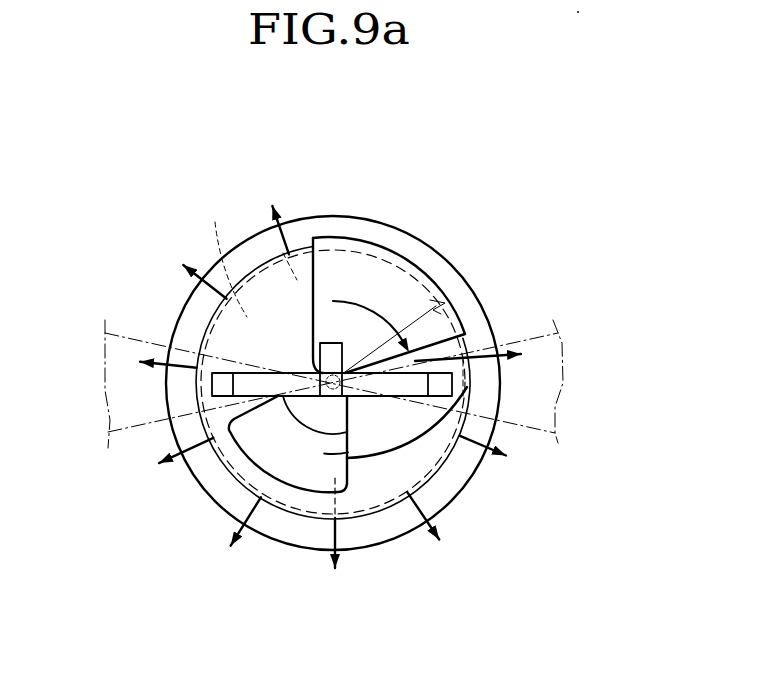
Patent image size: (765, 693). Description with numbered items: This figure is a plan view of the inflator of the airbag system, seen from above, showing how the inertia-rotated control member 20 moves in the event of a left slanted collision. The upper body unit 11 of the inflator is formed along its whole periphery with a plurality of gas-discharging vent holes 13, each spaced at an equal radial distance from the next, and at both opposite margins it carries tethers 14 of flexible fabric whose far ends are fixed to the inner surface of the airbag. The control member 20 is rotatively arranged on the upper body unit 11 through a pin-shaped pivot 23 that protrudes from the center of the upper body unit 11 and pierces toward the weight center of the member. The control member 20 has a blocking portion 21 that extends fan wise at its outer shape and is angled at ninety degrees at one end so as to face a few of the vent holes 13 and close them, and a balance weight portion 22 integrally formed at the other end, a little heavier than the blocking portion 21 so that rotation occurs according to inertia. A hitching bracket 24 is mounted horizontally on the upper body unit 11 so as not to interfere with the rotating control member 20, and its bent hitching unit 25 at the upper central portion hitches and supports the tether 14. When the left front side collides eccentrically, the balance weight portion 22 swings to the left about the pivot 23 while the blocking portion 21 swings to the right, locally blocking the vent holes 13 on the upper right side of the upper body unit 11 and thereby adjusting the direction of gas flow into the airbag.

The upper body unit 11 is at (333, 422).
The vent holes 13 is at (287, 255).
The tethers 14 is at (110, 478).
The control member 20 is at (408, 355).
The blocking portion 21 is at (429, 284).
The balance weight portion 22 is at (467, 363).
The pivot 23 is at (440, 304).
The hitching bracket 24 is at (247, 381).
The bent hitching unit 25 is at (334, 355).